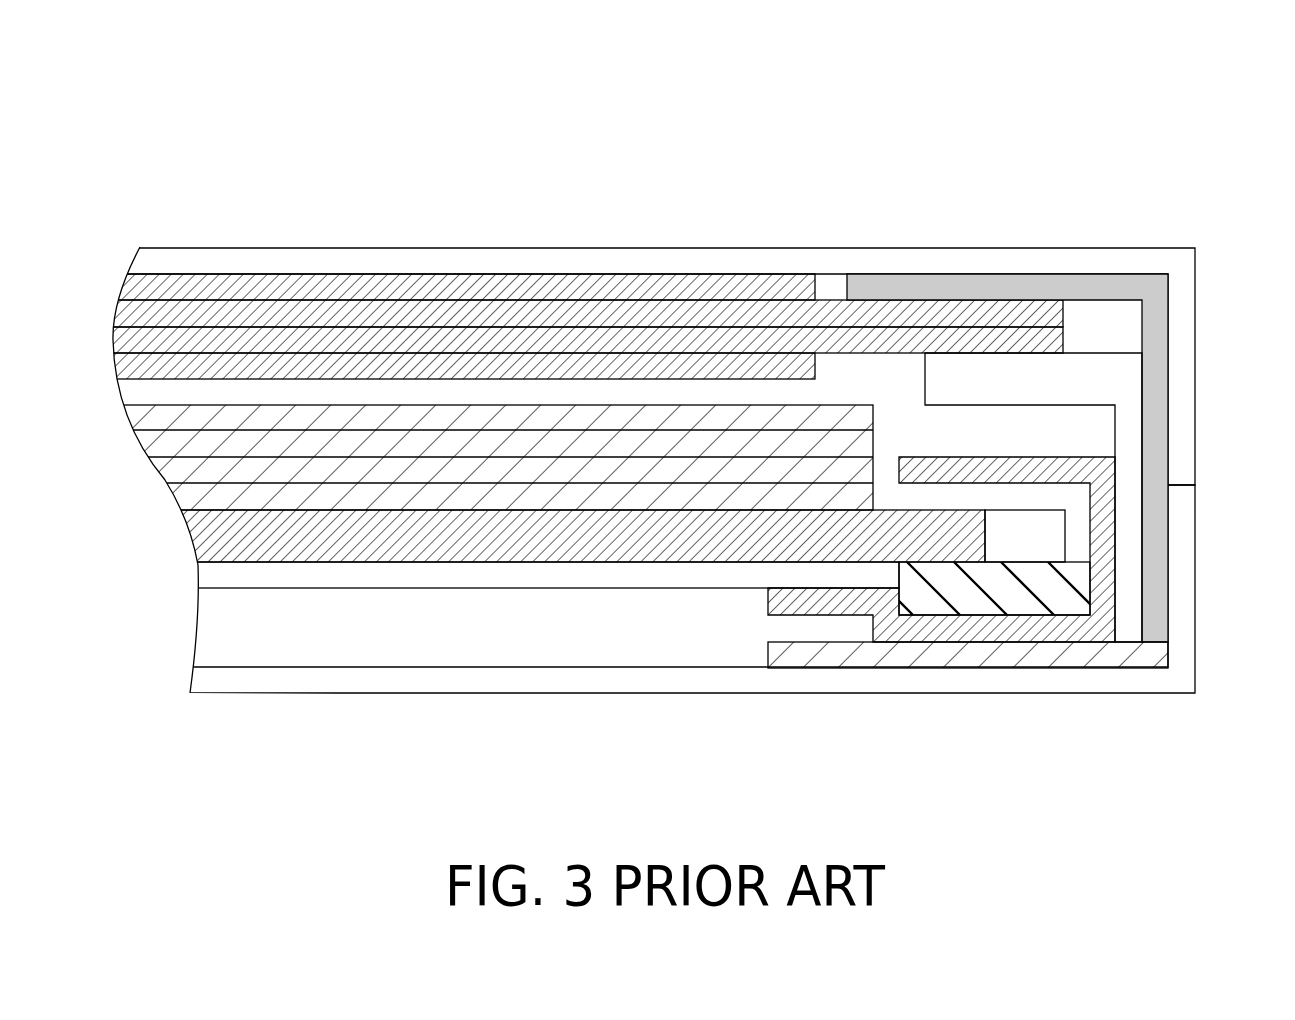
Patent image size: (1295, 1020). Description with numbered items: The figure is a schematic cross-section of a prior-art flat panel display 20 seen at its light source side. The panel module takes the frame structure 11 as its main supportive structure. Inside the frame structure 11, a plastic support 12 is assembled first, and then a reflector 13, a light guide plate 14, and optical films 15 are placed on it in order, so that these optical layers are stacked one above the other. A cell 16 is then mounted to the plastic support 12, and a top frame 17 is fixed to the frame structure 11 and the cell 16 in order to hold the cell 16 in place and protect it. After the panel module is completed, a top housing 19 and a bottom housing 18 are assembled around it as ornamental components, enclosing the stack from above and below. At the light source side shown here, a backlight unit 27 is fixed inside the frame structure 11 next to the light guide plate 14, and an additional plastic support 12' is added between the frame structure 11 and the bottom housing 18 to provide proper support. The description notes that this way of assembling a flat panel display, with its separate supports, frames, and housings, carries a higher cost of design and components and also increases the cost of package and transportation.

The frame structure 11 is at (1032, 627).
The plastic support 12 is at (1085, 490).
The additional plastic support 12' is at (968, 704).
The reflector 13 is at (705, 573).
The light guide plate 14 is at (610, 540).
The optical films 15 is at (497, 497).
The cell 16 is at (593, 340).
The top frame 17 is at (1000, 290).
The bottom housing 18 is at (1187, 538).
The top housing 19 is at (1180, 432).
The flat panel display 20 is at (1186, 98).
The backlight unit 27 is at (953, 602).